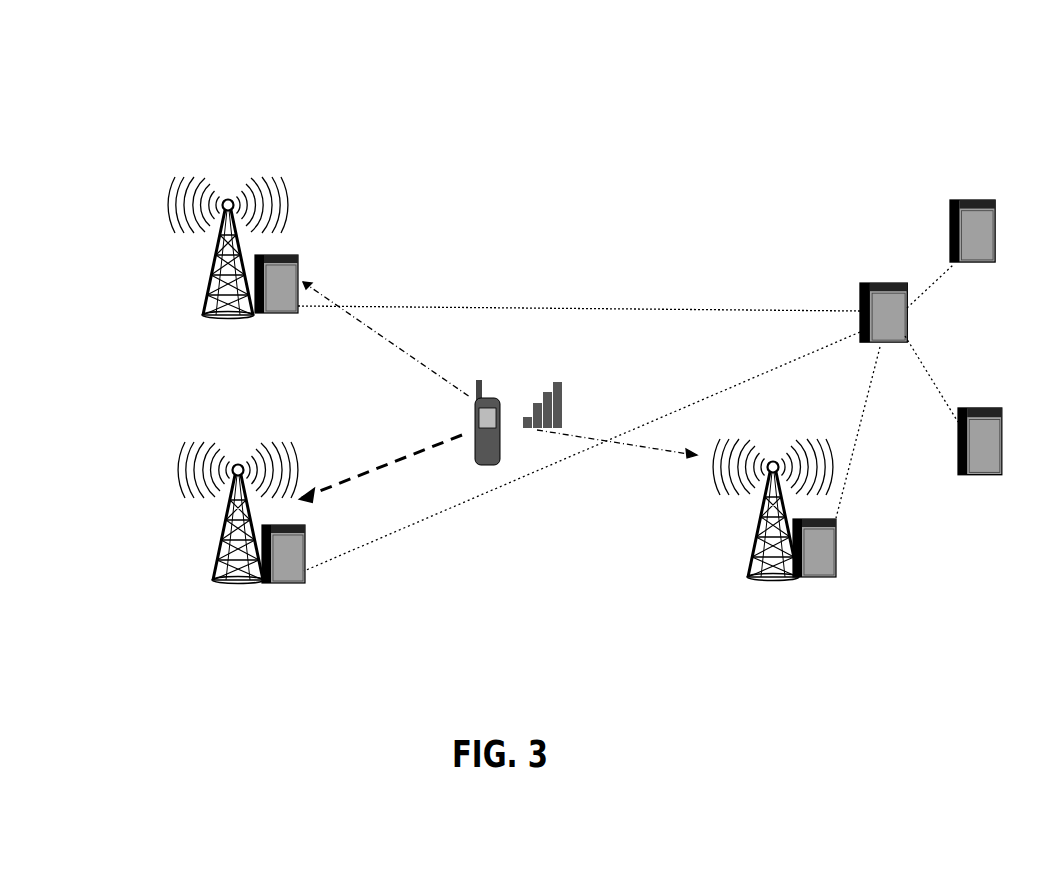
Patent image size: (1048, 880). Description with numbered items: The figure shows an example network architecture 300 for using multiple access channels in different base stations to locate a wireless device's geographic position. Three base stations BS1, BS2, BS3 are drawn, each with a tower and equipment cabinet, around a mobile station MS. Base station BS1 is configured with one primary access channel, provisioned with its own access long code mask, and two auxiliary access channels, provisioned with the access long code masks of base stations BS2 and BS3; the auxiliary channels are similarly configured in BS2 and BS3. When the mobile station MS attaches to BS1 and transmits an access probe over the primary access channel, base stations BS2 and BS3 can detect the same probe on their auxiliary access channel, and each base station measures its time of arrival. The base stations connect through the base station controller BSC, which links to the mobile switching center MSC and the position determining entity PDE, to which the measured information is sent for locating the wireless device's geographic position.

The network architecture 300 is at (450, 78).
The base station BS1 is at (241, 525).
The base station BS2 is at (233, 265).
The base station BS3 is at (774, 522).
The mobile station MS is at (518, 435).
The base station controller BSC is at (883, 332).
The mobile switching center MSC is at (972, 251).
The position determining entity PDE is at (980, 460).